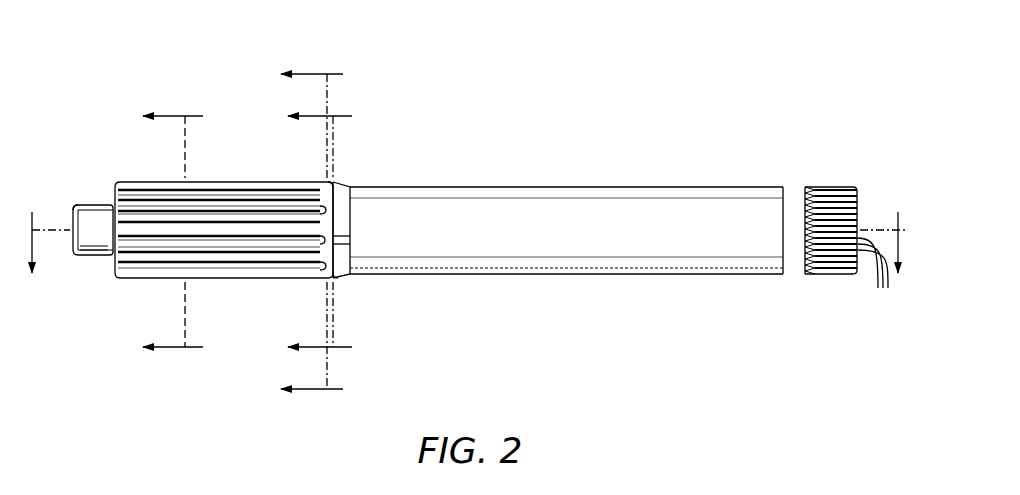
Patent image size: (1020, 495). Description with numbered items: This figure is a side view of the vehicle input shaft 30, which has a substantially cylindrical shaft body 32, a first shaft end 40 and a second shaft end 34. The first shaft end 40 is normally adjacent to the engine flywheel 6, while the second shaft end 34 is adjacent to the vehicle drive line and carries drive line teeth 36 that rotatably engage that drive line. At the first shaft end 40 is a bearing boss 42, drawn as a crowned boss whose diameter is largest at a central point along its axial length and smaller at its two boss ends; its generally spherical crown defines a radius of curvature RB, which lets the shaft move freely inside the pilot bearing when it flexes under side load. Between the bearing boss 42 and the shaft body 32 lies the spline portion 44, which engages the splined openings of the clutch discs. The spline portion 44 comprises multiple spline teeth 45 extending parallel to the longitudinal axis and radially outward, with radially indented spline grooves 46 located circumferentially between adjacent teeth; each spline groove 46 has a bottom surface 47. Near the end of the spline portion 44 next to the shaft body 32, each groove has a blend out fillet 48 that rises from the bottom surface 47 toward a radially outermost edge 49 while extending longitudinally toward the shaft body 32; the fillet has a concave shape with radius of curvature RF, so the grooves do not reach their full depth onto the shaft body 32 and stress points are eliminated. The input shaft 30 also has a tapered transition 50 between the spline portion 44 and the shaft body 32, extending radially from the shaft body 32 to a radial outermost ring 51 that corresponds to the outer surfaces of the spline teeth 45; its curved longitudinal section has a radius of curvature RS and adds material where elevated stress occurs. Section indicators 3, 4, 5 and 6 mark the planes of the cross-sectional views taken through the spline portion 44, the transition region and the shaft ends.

The input shaft 30 is at (493, 128).
The shaft body 32 is at (620, 212).
The second shaft end 34 is at (860, 197).
The drive line teeth 36 is at (877, 277).
The first shaft end 40 is at (73, 247).
The bearing boss 42 is at (95, 252).
The spline portion 44 is at (330, 178).
The spline teeth 45 is at (223, 200).
The spline grooves 46 is at (242, 215).
The bottom surface 47 is at (325, 243).
The blend out fillet 48 is at (333, 218).
The radially outermost edge 49 is at (325, 250).
The tapered transition 50 is at (348, 240).
The radial outermost ring 51 is at (338, 244).
The radius of curvature of bearing boss RB is at (97, 200).
The radius of curvature of blend out fillet RF is at (322, 180).
The radius of curvature of tapered transition RS is at (346, 280).
The section line 3 is at (166, 235).
The section line 4 is at (304, 234).
The section line 5 is at (312, 232).
The flywheel 6 is at (462, 252).